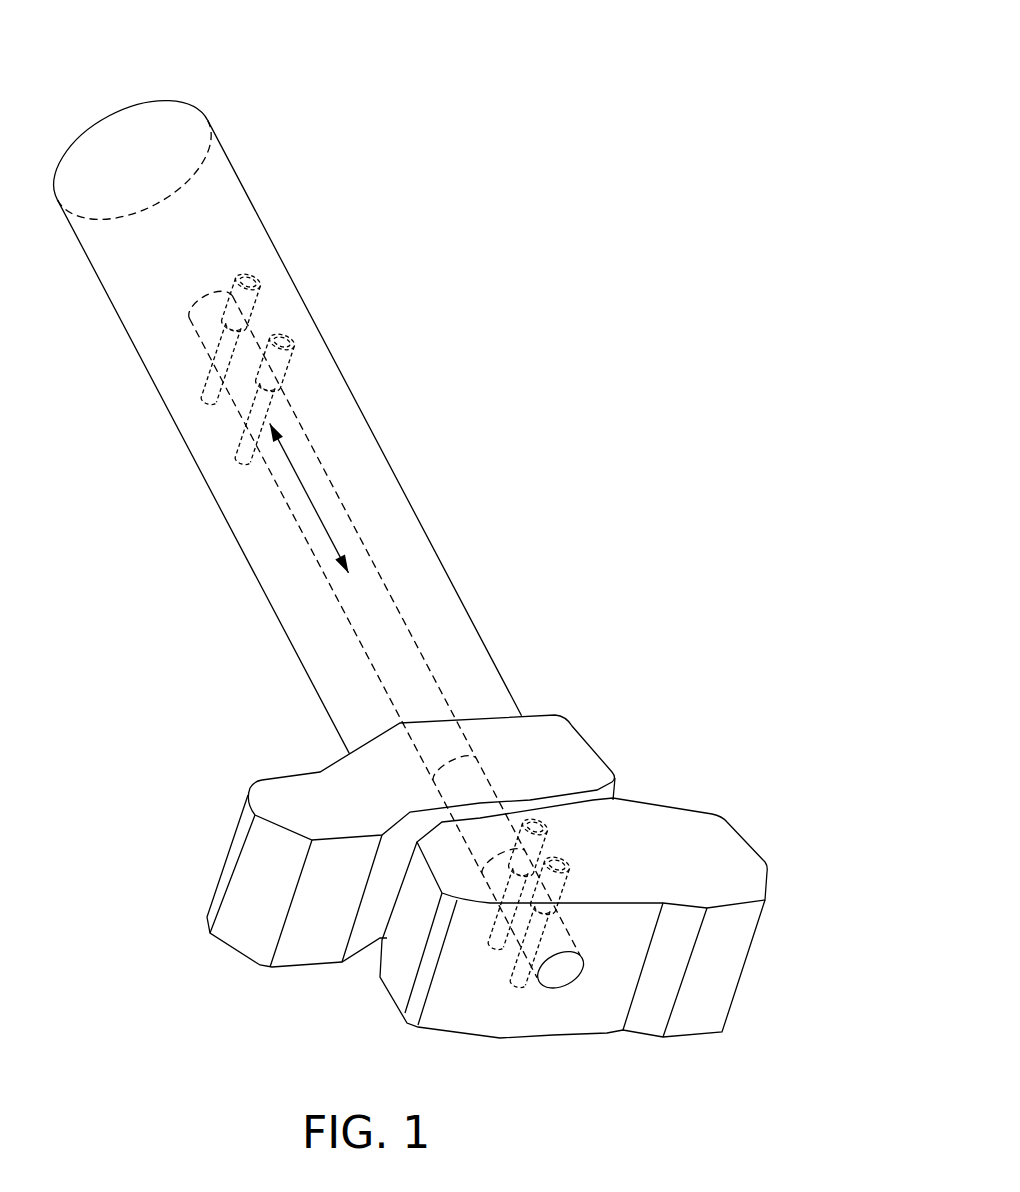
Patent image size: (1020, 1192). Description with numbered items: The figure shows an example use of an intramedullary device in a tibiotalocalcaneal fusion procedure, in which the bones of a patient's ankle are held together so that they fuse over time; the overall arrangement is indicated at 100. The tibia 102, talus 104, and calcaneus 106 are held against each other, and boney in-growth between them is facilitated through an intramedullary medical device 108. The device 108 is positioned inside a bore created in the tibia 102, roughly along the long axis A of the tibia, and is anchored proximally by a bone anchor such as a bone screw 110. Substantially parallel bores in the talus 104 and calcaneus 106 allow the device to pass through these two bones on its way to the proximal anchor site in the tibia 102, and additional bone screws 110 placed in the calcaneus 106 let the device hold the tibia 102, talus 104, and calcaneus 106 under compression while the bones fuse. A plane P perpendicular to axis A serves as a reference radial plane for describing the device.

The assembly 100 is at (666, 128).
The tibia 102 is at (237, 215).
The talus 104 is at (575, 757).
The calcaneus 106 is at (733, 852).
The intramedullary medical device 108 is at (300, 561).
The bone screw 110 is at (263, 265).
The plane P is at (126, 106).
The long axis A is at (312, 500).